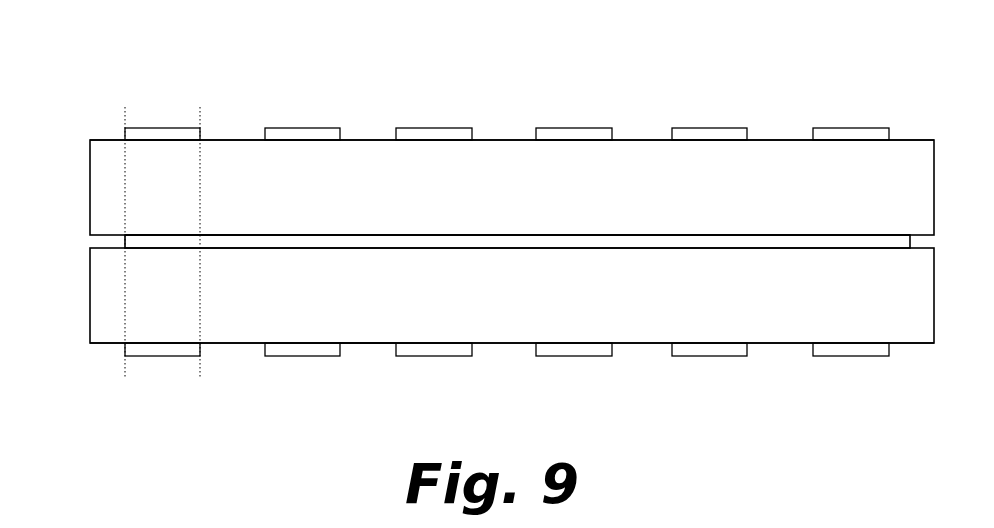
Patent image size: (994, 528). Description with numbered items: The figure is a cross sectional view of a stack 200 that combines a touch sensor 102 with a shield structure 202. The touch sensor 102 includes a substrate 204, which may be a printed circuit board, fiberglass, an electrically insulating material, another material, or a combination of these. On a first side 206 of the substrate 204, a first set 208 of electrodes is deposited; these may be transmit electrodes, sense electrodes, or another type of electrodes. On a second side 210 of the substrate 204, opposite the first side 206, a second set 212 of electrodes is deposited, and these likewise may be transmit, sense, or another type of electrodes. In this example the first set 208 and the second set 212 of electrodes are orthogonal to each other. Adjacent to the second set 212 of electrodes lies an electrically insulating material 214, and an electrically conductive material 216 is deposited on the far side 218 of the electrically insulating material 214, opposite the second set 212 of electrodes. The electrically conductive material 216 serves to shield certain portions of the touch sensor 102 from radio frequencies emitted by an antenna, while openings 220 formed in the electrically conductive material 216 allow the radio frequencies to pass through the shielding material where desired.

The stack 200 is at (99, 74).
The touch sensor 102 is at (72, 163).
The shield structure 202 is at (72, 303).
The substrate 204 is at (323, 195).
The first side 206 is at (366, 139).
The first set of electrodes 208 is at (288, 108).
The second side 210 is at (487, 234).
The second set of electrodes 212 is at (278, 240).
The electrically insulating material 214 is at (333, 310).
The electrically conductive material 216 is at (272, 349).
The far side 218 is at (492, 344).
The openings 220 is at (371, 364).